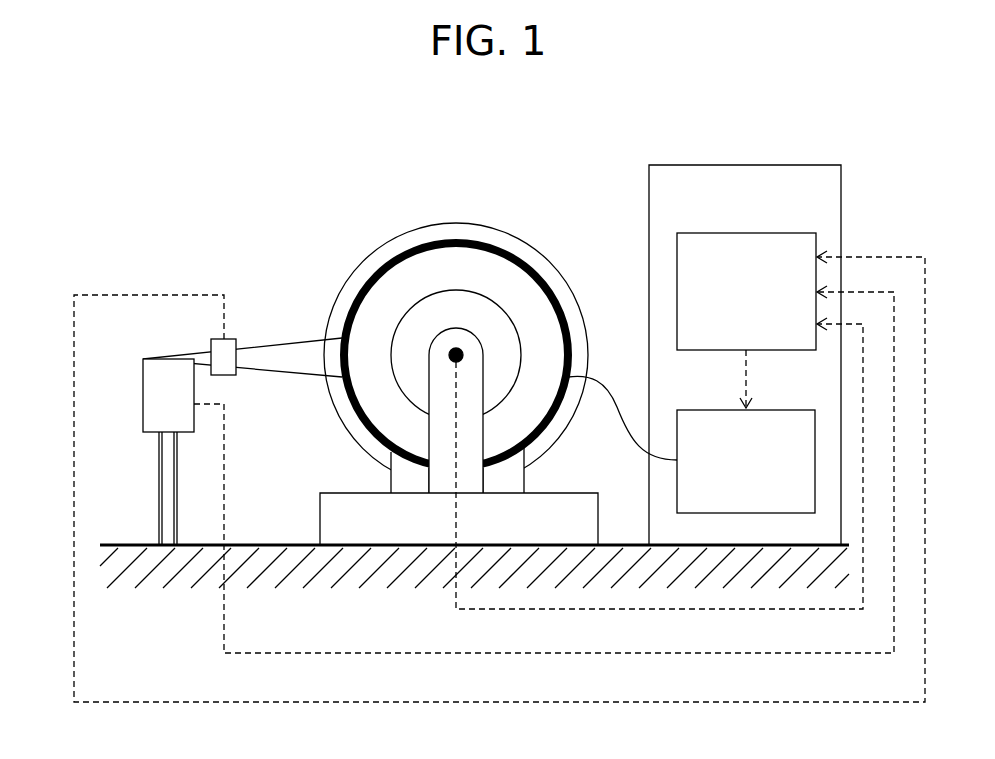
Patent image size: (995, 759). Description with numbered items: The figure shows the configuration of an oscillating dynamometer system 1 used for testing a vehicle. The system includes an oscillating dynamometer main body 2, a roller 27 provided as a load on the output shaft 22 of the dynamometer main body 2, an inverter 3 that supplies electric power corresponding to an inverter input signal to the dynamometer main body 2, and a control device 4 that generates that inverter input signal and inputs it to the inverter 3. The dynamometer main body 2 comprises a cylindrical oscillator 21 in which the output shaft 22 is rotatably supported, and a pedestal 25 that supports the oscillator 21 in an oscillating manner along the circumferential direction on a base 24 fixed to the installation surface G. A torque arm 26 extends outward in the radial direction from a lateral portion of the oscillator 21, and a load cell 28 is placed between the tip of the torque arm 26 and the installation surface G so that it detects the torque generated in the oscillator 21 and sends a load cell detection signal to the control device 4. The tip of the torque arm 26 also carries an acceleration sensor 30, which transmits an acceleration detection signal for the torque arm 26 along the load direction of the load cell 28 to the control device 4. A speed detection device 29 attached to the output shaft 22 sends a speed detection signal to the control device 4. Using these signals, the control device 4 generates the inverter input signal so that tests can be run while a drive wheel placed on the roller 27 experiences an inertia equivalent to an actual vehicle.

The dynamometer system 1 is at (335, 124).
The dynamometer main body 2 is at (278, 219).
The inverter 3 is at (802, 410).
The control device 4 is at (801, 233).
The oscillator 21 is at (522, 253).
The output shaft 22 is at (425, 300).
The base 24 is at (558, 492).
The pedestal 25 is at (390, 481).
The torque arm 26 is at (283, 344).
The roller 27 is at (478, 222).
The load cell 28 is at (154, 399).
The speed detection device 29 is at (463, 350).
The acceleration sensor 30 is at (233, 339).
The installation surface G is at (264, 544).